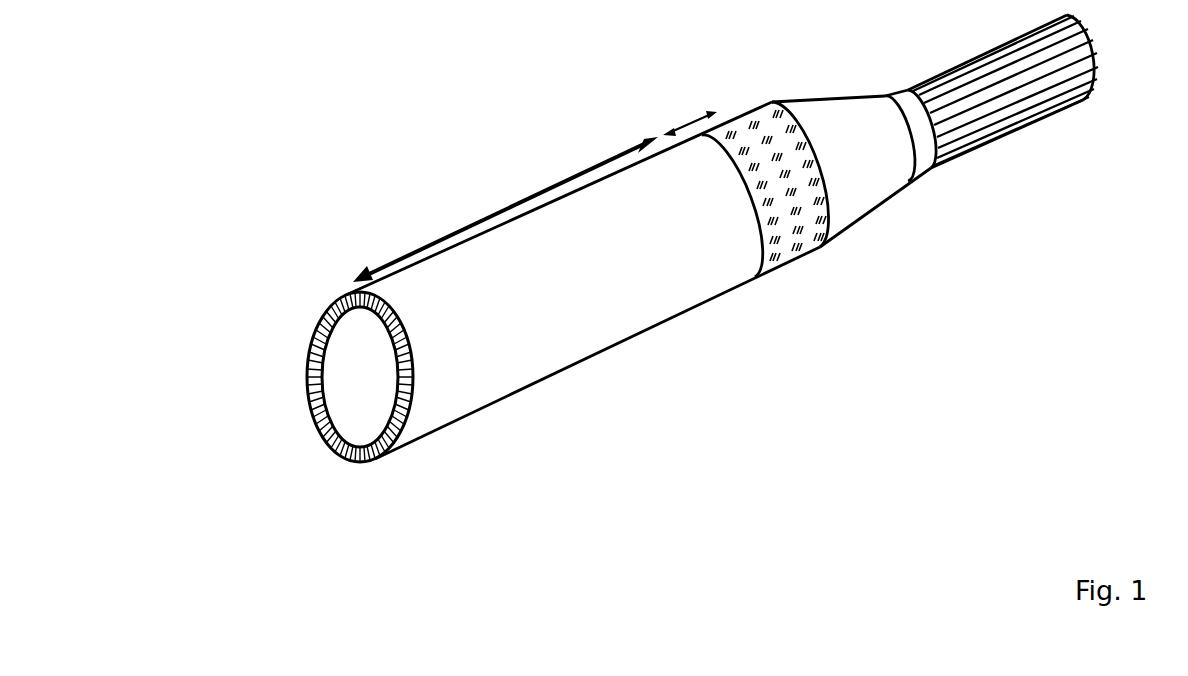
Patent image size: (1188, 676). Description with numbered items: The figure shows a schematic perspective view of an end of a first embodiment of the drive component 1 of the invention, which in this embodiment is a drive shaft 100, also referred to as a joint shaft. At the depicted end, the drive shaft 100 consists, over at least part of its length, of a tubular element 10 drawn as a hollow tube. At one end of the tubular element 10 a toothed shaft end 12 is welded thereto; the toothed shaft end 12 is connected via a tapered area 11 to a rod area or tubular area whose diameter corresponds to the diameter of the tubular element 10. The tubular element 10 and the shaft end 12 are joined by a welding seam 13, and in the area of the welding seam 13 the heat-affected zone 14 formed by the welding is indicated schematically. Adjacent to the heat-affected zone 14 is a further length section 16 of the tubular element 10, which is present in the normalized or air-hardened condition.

The drive component 1 is at (694, 238).
The drive shaft 100 is at (362, 168).
The tubular element 10 is at (560, 342).
The tapered area 11 is at (870, 167).
The toothed shaft end 12 is at (1027, 90).
The welding seam 13 is at (752, 257).
The heat-affected zone 14 is at (690, 117).
The further length section 16 is at (505, 209).